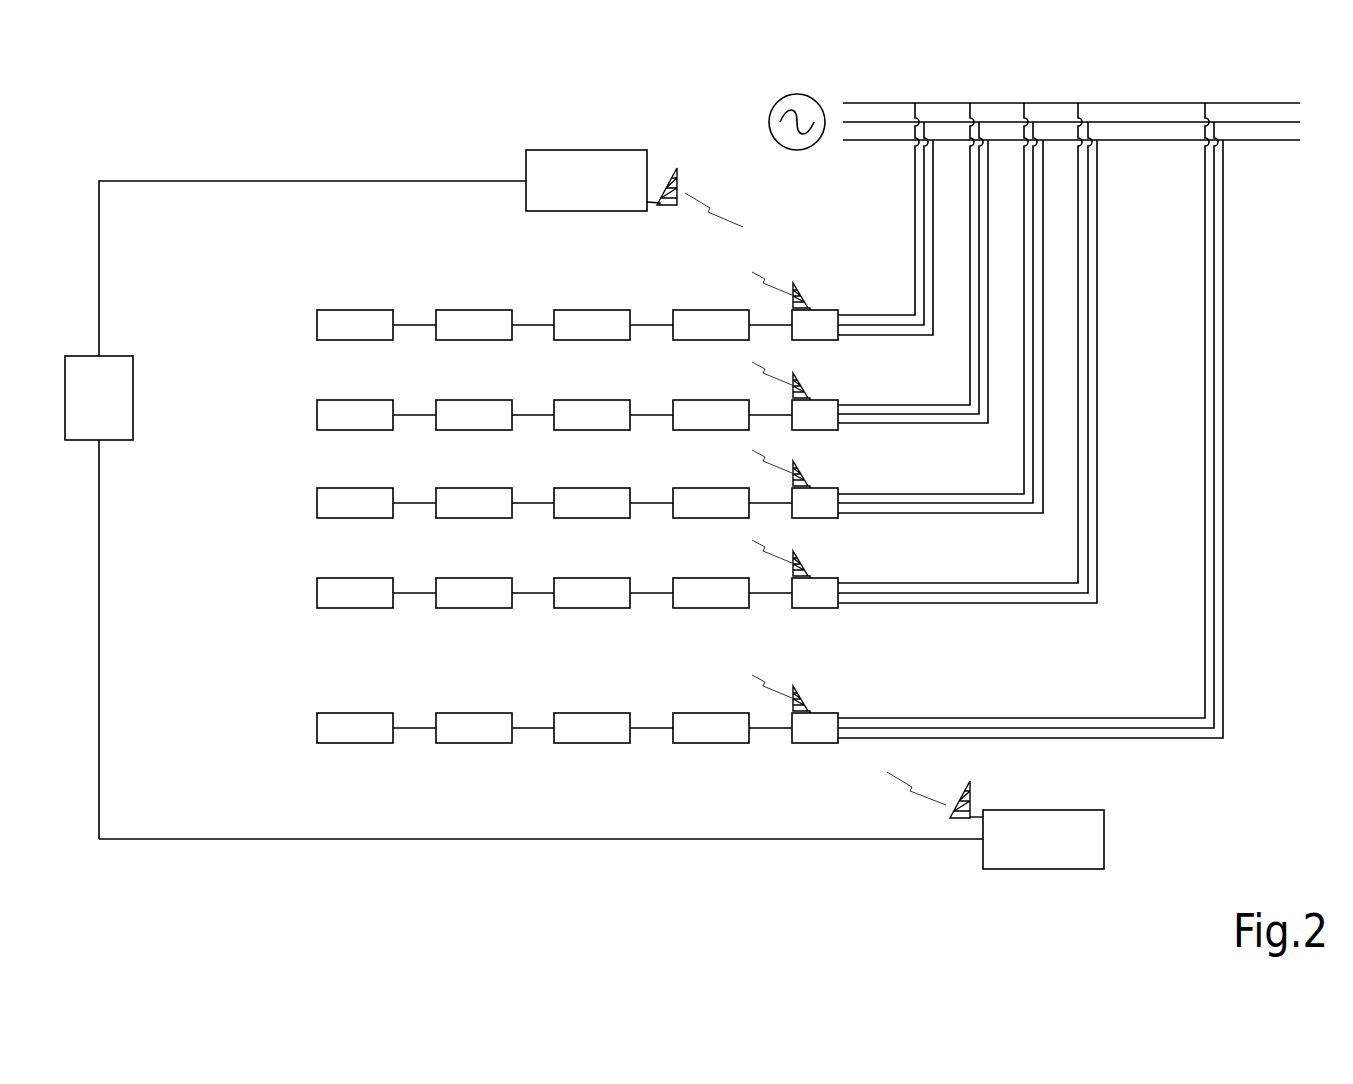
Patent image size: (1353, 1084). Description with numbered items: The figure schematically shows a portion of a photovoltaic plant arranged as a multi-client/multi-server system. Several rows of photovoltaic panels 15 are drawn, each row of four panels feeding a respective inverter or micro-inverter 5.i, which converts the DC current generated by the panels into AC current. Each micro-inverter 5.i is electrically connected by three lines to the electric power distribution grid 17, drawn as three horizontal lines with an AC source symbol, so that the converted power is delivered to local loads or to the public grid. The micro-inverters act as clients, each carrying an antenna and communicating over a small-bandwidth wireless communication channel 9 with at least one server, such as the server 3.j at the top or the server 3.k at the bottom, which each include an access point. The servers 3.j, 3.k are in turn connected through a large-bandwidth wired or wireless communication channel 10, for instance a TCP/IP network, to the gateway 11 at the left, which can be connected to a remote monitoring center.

The electric power distribution grid 17 is at (1265, 94).
The server 3.j is at (583, 157).
The server 3.k is at (1038, 851).
The communication channel 9 is at (757, 257).
The gateway 11 is at (123, 389).
The communication channel 10 is at (418, 839).
The photovoltaic panel 15 is at (554, 504).
The micro-inverter 5.i is at (826, 318).